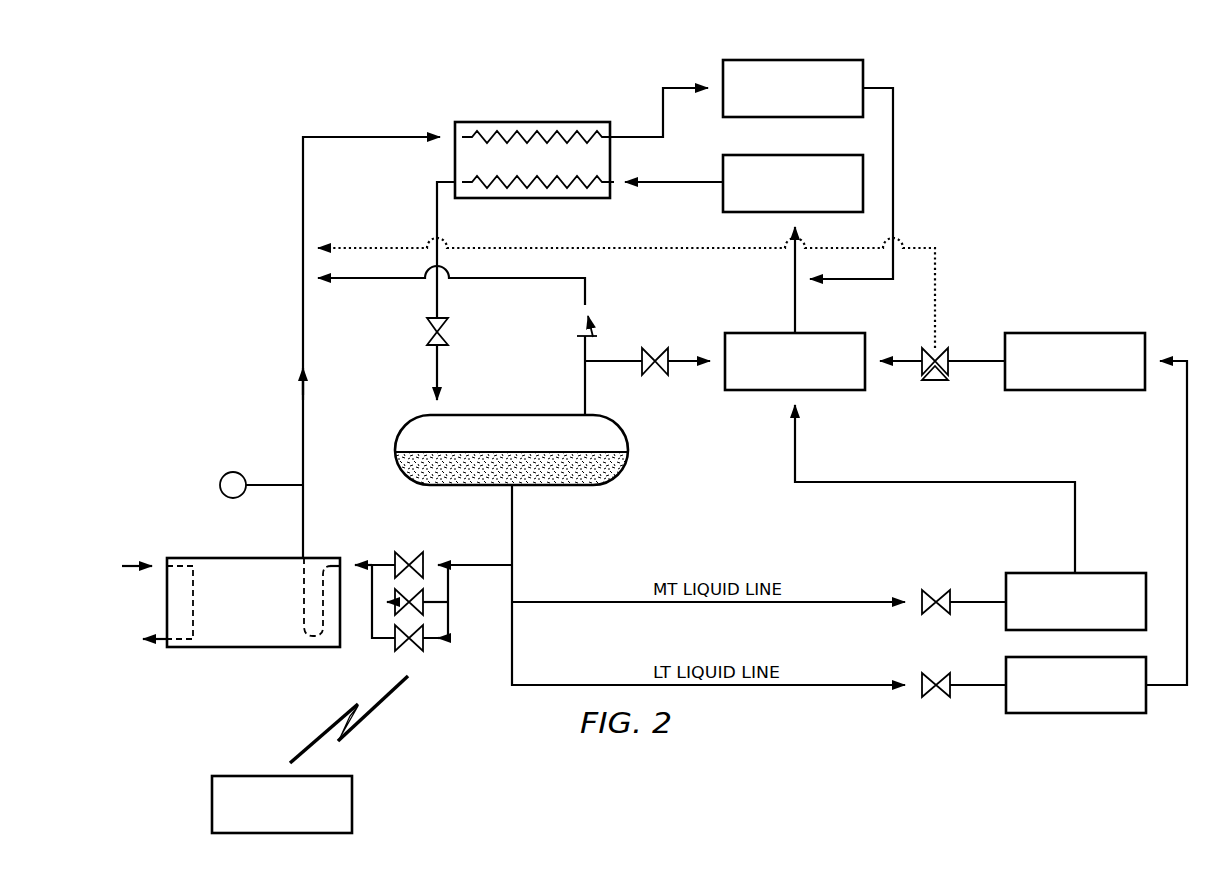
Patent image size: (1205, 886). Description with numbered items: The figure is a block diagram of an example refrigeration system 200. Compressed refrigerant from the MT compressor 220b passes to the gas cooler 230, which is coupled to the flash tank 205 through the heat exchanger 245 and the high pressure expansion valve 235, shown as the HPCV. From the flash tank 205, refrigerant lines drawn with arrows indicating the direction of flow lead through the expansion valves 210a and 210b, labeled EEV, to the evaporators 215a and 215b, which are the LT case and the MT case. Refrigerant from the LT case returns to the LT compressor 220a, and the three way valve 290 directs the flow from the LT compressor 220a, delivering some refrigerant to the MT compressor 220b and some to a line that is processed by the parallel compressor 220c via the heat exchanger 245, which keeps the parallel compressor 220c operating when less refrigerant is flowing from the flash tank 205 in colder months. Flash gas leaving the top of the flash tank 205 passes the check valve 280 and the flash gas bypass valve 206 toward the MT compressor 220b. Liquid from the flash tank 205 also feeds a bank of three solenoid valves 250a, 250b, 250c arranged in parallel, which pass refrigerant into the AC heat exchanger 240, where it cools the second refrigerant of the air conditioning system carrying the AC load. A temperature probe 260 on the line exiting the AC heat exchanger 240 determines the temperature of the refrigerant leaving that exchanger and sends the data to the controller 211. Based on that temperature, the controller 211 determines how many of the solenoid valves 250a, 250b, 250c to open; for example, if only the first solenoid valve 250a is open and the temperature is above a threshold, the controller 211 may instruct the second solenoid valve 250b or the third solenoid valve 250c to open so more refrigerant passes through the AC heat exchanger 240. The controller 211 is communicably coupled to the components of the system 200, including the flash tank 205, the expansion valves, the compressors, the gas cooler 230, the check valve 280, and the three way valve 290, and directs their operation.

The refrigeration system 200 is at (1052, 63).
The flash tank 205 is at (552, 486).
The flash gas bypass valve 206 is at (655, 372).
The expansion valve 210a is at (940, 696).
The expansion valve 210b is at (940, 612).
The controller 211 is at (355, 803).
The evaporator 215a is at (1095, 714).
The evaporator 215b is at (1095, 572).
The LT compressor 220a is at (1070, 332).
The MT compressor 220b is at (810, 332).
The parallel compressor 220c is at (812, 59).
The gas cooler 230 is at (812, 154).
The high pressure expansion valve 235 is at (432, 346).
The AC heat exchanger 240 is at (262, 648).
The heat exchanger 245 is at (545, 121).
The solenoid valve 250a is at (428, 555).
The solenoid valve 250b is at (422, 592).
The solenoid valve 250c is at (410, 648).
The temperature probe 260 is at (223, 476).
The check valve 280 is at (583, 311).
The three way valve 290 is at (940, 381).